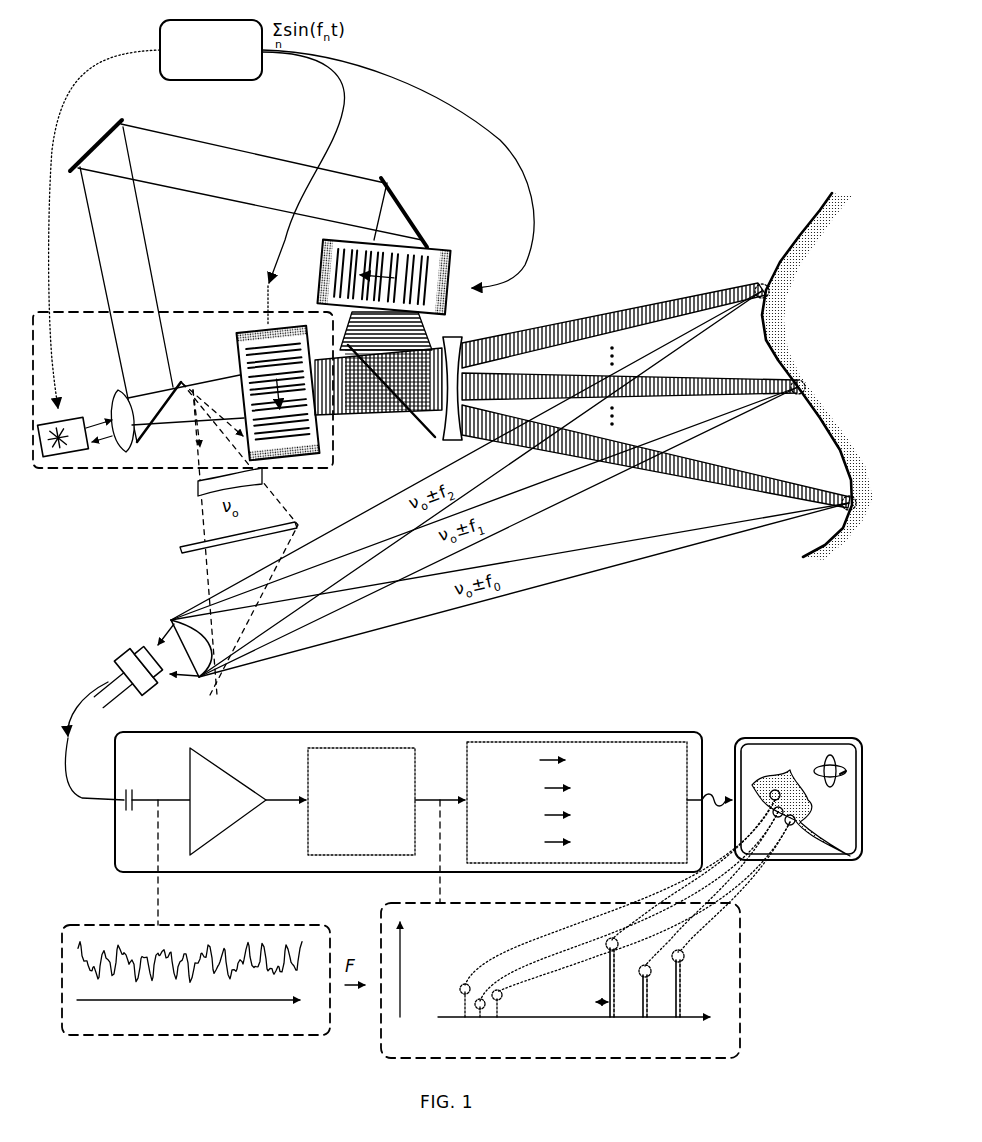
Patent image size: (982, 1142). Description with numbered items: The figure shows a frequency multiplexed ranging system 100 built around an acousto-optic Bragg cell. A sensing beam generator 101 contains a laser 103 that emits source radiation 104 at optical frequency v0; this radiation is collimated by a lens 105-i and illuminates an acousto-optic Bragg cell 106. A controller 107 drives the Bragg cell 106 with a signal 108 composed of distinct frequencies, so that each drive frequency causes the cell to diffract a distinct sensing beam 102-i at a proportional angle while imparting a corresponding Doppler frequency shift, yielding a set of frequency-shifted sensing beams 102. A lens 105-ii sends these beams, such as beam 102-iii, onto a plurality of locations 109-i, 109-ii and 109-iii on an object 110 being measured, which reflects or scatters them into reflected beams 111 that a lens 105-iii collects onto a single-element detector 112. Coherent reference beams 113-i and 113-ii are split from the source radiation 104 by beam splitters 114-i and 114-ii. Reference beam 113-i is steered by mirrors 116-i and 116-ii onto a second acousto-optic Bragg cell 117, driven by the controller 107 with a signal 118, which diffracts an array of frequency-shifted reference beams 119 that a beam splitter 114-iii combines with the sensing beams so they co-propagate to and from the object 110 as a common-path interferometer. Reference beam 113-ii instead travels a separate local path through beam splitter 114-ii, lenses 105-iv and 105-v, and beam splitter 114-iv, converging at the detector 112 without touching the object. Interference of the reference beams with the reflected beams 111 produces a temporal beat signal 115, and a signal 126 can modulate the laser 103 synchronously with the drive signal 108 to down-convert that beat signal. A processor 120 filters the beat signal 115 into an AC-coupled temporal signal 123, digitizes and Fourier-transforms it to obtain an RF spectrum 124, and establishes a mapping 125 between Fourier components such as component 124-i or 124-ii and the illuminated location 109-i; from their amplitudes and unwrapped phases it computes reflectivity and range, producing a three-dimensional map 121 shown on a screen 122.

The frequency multiplexed ranging system 100 is at (631, 100).
The sensing beam generator 101 is at (56, 476).
The frequency-shifted sensing beams 102 is at (343, 455).
The diffracted sensing beam 102-i is at (380, 462).
The sensing beam 102-iii is at (630, 310).
The laser 103 is at (68, 450).
The source radiation 104 is at (108, 410).
The lens 105-i is at (112, 392).
The lens 105-ii is at (452, 445).
The lens 105-iii is at (173, 622).
The lens 105-iv is at (196, 490).
The lens 105-v is at (182, 550).
The acousto-optic Bragg cell 106 is at (238, 345).
The controller 107 is at (211, 50).
The drive signal 108 is at (328, 134).
The illuminated location 109-i is at (858, 517).
The illuminated location 109-ii is at (810, 385).
The illuminated location 109-iii is at (787, 300).
The object 110 is at (802, 236).
The reflected beams 111 is at (334, 660).
The single-element detector 112 is at (120, 658).
The reference beam 113-i is at (140, 238).
The local reference beam 113-ii is at (195, 515).
The beam splitter 114-i is at (160, 426).
The beam splitter 114-ii is at (212, 372).
The beam splitter 114-iii is at (366, 450).
The beam splitter 114-iv is at (215, 688).
The temporal beat signal 115 is at (72, 798).
The mirror 116-i is at (100, 128).
The mirror 116-ii is at (412, 200).
The acousto-optic Bragg cell 117 is at (440, 255).
The drive signal 118 is at (408, 84).
The frequency-shifted reference beams 119 is at (432, 332).
The processor 120 is at (432, 730).
The 3D map 121 is at (828, 850).
The screen 122 is at (798, 767).
The AC-coupled temporal signal 123 is at (112, 924).
The RF spectrum 124 is at (600, 980).
The Fourier component 124-i is at (682, 986).
The Fourier component 124-ii is at (498, 1012).
The mapping 125 is at (736, 893).
The modulation signal 126 is at (100, 70).